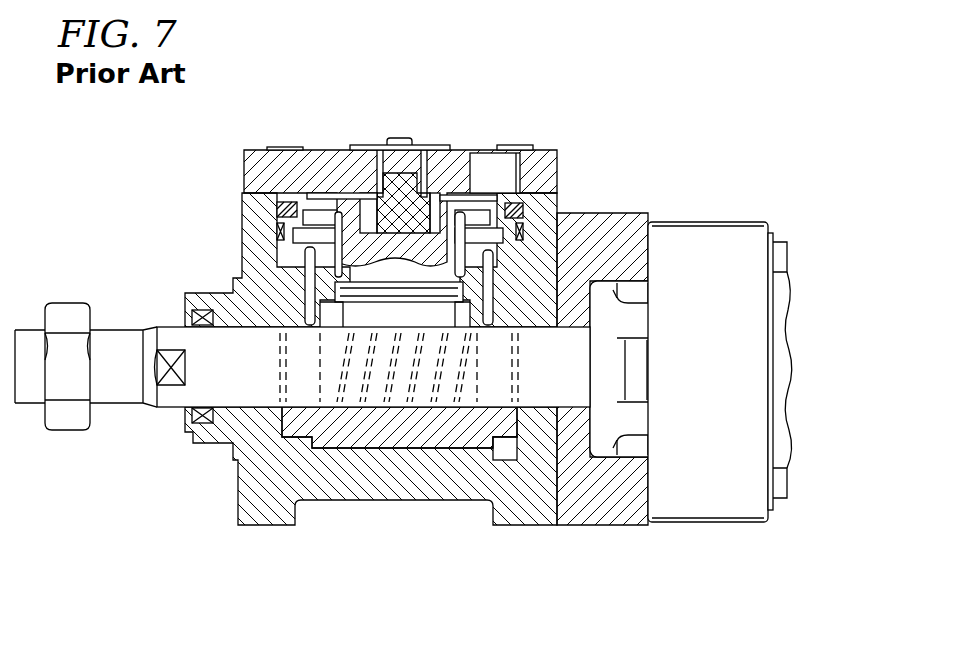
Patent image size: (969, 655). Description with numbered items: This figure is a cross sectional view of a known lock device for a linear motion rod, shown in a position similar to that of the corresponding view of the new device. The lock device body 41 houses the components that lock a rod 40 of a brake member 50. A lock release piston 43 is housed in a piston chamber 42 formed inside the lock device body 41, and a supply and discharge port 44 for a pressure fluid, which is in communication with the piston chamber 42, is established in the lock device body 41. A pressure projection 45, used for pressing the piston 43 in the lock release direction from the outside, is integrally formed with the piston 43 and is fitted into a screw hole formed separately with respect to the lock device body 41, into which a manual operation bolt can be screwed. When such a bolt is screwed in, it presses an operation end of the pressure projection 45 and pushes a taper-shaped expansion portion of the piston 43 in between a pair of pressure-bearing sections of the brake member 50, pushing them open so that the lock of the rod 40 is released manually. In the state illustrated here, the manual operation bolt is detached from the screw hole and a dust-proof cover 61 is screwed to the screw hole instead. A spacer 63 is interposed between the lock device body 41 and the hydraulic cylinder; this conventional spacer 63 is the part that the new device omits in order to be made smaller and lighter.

The rod 40 is at (205, 348).
The lock device body 41 is at (574, 188).
The piston chamber 42 is at (321, 192).
The lock release piston 43 is at (460, 207).
The supply and discharge port 44 is at (501, 167).
The pressure projection 45 is at (401, 190).
The brake member 50 is at (368, 428).
The dust-proof cover 61 is at (372, 146).
The spacer 63 is at (597, 493).